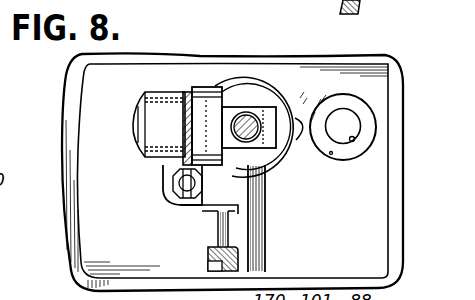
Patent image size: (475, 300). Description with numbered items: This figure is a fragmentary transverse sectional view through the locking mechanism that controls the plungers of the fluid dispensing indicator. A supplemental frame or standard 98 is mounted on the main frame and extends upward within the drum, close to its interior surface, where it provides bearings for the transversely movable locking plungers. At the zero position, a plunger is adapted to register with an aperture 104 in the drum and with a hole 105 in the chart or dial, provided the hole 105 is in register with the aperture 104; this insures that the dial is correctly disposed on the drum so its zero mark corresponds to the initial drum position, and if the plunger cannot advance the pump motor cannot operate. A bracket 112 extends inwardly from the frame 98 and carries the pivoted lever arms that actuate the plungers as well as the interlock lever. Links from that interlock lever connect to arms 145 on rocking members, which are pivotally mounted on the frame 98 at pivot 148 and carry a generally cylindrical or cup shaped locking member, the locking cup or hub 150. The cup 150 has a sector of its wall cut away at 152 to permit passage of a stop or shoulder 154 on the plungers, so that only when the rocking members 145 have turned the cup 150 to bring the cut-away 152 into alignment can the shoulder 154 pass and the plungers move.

The supplemental frame or standard 98 is at (256, 214).
The aperture in the drum 104 is at (331, 155).
The hole in the chart or dial 105 is at (353, 142).
The bracket 112 is at (207, 255).
The rocking member arm 145 is at (186, 88).
The pivot 148 is at (133, 124).
The locking cup or hub 150 is at (205, 87).
The cut-away sector 152 is at (226, 108).
The stop or shoulder 154 is at (272, 118).